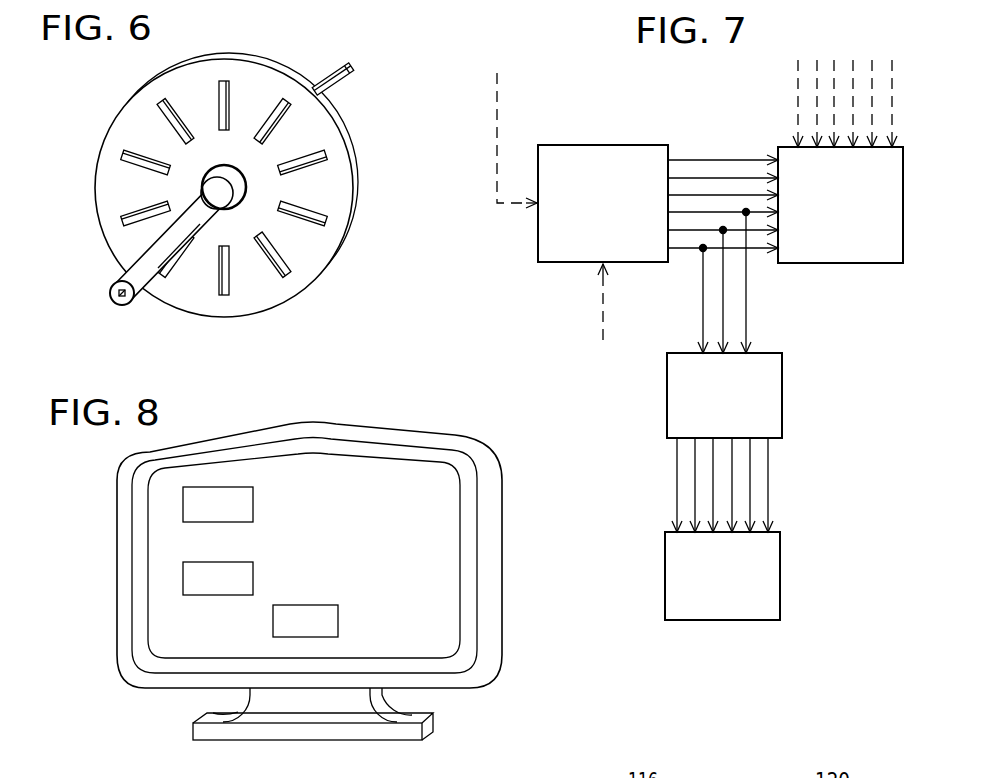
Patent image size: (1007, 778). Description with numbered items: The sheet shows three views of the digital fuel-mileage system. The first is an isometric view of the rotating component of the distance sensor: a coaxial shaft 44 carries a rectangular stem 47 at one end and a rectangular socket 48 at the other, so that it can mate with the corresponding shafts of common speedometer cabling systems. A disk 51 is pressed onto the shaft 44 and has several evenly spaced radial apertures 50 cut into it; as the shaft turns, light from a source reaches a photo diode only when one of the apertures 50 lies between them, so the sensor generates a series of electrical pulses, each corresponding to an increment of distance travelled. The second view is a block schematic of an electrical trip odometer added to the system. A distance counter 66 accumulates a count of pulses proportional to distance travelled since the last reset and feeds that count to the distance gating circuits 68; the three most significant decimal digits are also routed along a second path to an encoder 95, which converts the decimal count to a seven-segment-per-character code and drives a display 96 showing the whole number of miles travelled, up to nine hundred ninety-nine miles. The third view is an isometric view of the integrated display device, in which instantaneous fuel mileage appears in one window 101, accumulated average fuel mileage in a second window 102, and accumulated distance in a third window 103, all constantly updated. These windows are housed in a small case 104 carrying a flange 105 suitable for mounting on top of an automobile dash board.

In FIG. 6, the coaxial shaft 44 is at (120, 279).
In FIG. 6, the rectangular stem 47 is at (351, 68).
In FIG. 6, the rectangular socket 48 is at (109, 294).
In FIG. 6, the radial apertures 50 is at (283, 280).
In FIG. 6, the disk 51 is at (120, 122).
In FIG. 7, the distance counter 66 is at (583, 145).
In FIG. 7, the distance gating circuits 68 is at (852, 264).
In FIG. 7, the encoder 95 is at (782, 400).
In FIG. 7, the display 96 is at (780, 572).
In FIG. 8, the window 101 is at (183, 507).
In FIG. 8, the second window 102 is at (183, 576).
In FIG. 8, the third window 103 is at (338, 623).
In FIG. 8, the case 104 is at (118, 650).
In FIG. 8, the flange 105 is at (193, 735).